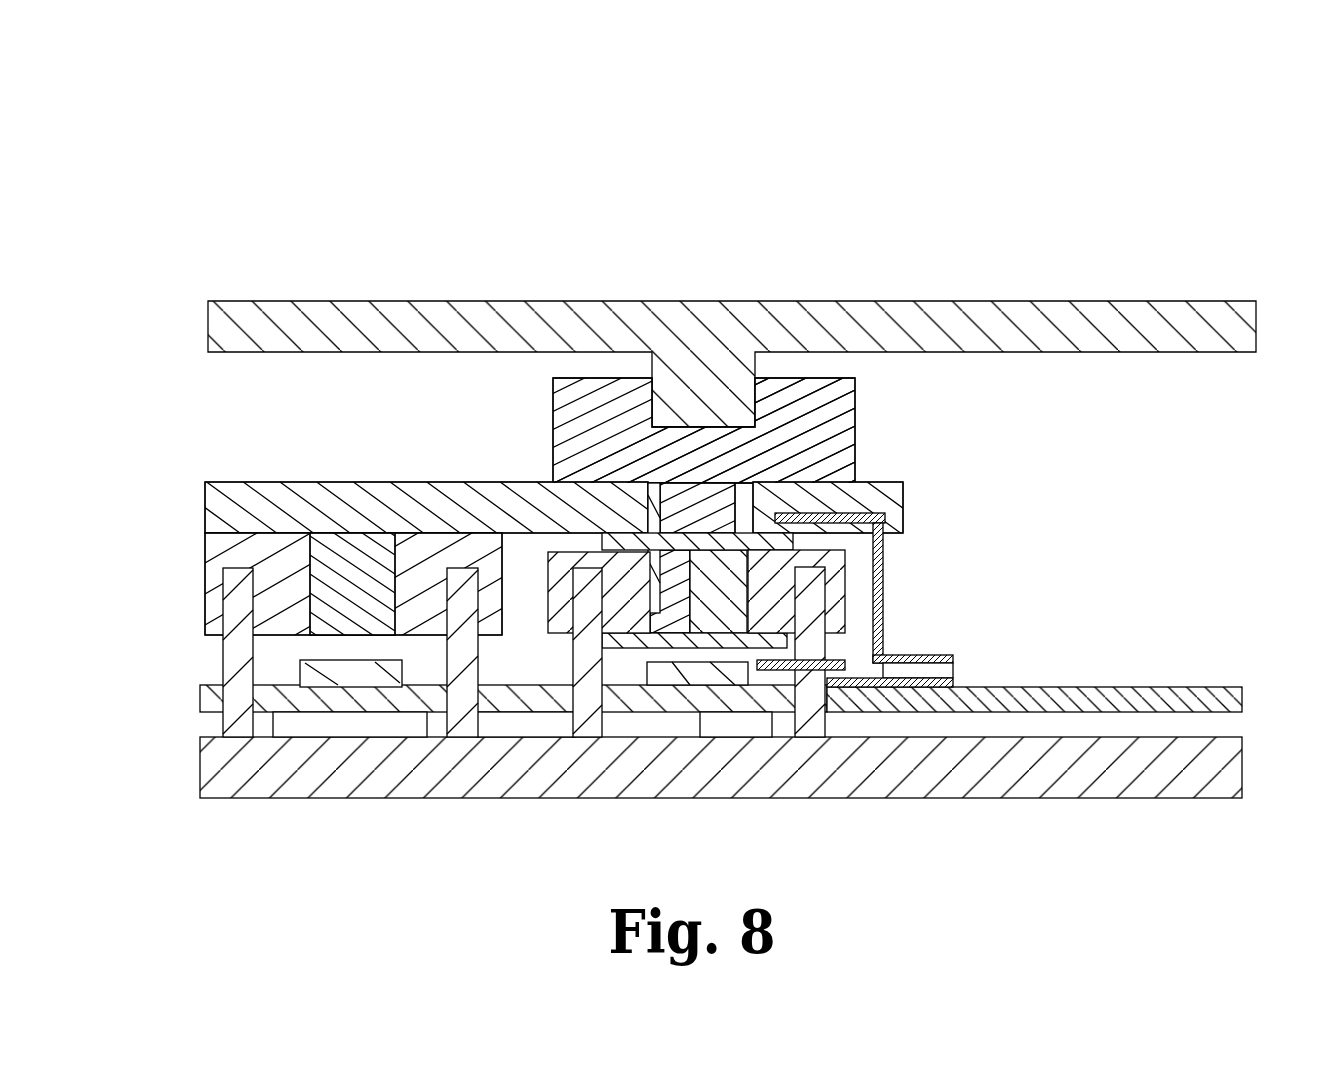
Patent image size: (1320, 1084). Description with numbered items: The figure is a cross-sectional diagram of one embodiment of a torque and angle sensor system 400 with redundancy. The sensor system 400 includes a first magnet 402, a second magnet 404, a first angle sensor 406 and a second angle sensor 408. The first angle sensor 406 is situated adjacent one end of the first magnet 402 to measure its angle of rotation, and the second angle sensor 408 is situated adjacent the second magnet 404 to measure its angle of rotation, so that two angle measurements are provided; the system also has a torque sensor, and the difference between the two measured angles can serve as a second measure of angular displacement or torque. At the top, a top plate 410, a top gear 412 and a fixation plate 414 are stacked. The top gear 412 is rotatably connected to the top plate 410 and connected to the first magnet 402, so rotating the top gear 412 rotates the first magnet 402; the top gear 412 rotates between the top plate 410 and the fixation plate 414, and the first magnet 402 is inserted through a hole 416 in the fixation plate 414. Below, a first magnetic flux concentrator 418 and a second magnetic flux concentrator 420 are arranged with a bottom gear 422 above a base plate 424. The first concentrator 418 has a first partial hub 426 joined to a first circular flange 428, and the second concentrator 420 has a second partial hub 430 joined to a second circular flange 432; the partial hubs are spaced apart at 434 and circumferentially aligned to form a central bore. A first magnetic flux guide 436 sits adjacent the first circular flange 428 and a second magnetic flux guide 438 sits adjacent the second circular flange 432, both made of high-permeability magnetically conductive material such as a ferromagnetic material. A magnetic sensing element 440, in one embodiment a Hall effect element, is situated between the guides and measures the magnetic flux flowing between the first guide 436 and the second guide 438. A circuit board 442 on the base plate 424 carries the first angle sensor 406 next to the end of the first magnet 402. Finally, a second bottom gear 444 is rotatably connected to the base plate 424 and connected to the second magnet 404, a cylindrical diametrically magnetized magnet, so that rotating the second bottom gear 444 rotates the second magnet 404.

The torque and angle sensor system 400 is at (1163, 105).
The first magnet 402 is at (725, 492).
The second magnet 404 is at (343, 552).
The first angle sensor 406 is at (712, 680).
The second angle sensor 408 is at (335, 682).
The top plate 410 is at (950, 315).
The top gear 412 is at (855, 392).
The fixation plate 414 is at (222, 490).
The hole 416 is at (645, 480).
The first magnetic flux concentrator 418 is at (588, 598).
The second magnetic flux concentrator 420 is at (781, 597).
The bottom gear 422 is at (837, 572).
The base plate 424 is at (1145, 787).
The first partial hub 426 is at (625, 655).
The first circular flange 428 is at (648, 545).
The second partial hub 430 is at (883, 552).
The second circular flange 432 is at (735, 600).
The spacing 434 is at (700, 655).
The first magnetic flux guide 436 is at (884, 638).
The second magnetic flux guide 438 is at (805, 672).
The magnetic sensing element 440 is at (940, 668).
The circuit board 442 is at (204, 693).
The second bottom gear 444 is at (217, 548).